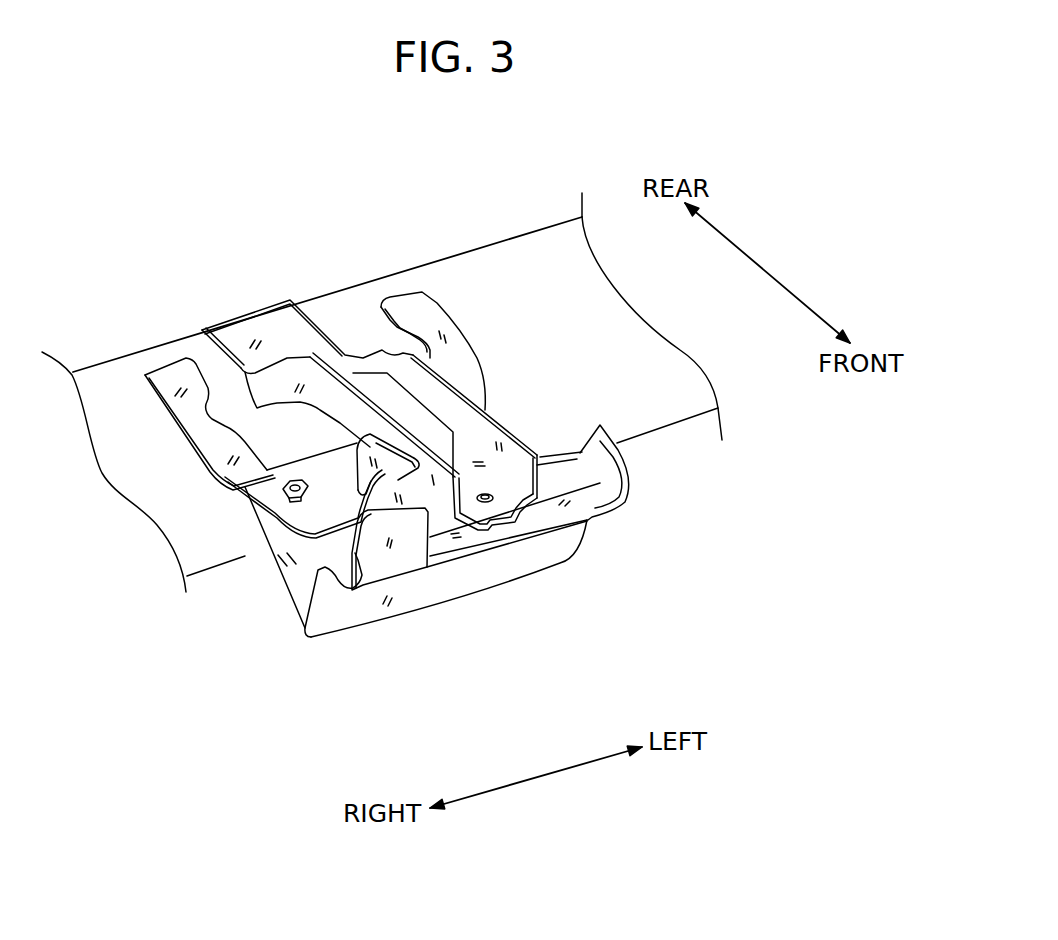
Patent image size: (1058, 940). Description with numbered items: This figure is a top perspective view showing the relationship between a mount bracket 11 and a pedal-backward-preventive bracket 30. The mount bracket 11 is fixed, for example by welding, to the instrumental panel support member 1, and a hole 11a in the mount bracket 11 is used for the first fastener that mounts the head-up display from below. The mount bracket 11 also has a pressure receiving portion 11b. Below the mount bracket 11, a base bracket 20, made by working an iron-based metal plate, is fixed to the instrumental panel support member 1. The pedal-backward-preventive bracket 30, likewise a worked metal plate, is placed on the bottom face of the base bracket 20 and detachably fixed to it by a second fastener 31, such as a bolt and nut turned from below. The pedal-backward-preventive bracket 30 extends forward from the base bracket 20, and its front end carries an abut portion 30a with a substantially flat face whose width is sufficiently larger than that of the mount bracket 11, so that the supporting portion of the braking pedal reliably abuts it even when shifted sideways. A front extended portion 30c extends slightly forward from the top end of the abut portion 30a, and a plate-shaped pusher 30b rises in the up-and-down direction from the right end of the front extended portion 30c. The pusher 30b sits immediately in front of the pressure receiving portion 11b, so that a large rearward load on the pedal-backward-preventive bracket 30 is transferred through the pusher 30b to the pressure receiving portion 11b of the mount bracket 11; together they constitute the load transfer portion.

The instrumental panel support member 1 is at (502, 252).
The mount bracket 11 is at (425, 380).
The hole 11a is at (488, 492).
The pressure receiving portion 11b is at (375, 443).
The base bracket 20 is at (467, 360).
The pedal-backward-preventive bracket 30 is at (288, 578).
The abut portion 30a is at (455, 583).
The pusher 30b is at (398, 562).
The front extended portion 30c is at (470, 538).
The second fastener 31 is at (285, 487).